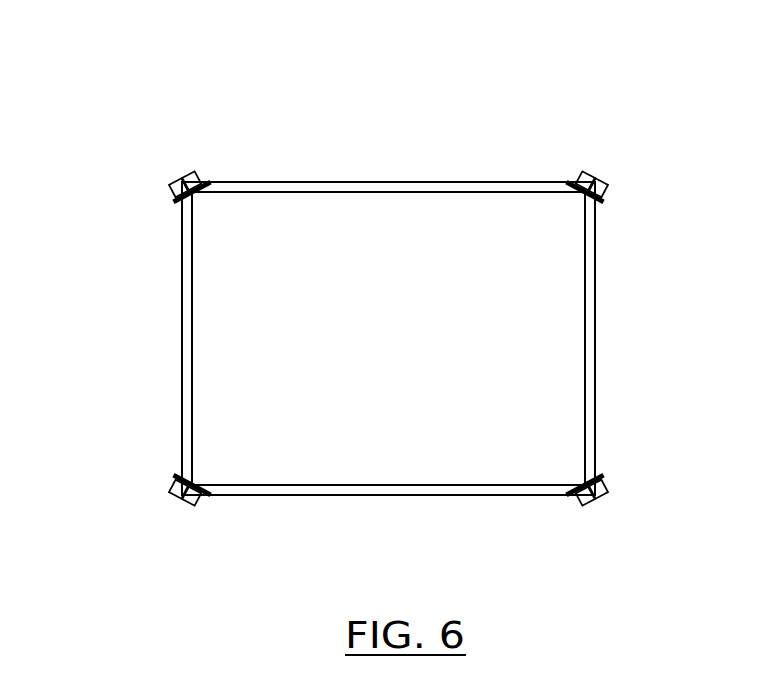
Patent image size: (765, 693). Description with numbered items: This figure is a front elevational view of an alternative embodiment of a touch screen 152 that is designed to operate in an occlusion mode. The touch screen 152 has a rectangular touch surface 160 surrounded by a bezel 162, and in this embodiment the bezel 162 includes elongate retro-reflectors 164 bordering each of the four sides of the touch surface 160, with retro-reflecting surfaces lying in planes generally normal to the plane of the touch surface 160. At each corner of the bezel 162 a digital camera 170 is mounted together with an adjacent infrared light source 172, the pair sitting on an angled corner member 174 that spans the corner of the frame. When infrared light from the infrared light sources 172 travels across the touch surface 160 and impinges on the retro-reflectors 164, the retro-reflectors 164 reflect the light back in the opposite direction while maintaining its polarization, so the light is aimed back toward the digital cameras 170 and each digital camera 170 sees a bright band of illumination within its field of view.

The touch screen 152 is at (513, 130).
The touch surface 160 is at (337, 328).
The bezel 162 is at (427, 500).
The elongate retro-reflectors 164 is at (508, 167).
The digital camera 170 is at (168, 197).
The infrared light source 172 is at (187, 170).
The corner bar 174 is at (212, 170).